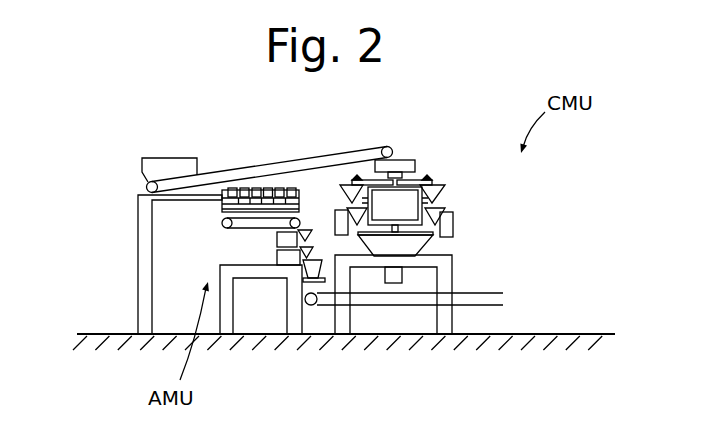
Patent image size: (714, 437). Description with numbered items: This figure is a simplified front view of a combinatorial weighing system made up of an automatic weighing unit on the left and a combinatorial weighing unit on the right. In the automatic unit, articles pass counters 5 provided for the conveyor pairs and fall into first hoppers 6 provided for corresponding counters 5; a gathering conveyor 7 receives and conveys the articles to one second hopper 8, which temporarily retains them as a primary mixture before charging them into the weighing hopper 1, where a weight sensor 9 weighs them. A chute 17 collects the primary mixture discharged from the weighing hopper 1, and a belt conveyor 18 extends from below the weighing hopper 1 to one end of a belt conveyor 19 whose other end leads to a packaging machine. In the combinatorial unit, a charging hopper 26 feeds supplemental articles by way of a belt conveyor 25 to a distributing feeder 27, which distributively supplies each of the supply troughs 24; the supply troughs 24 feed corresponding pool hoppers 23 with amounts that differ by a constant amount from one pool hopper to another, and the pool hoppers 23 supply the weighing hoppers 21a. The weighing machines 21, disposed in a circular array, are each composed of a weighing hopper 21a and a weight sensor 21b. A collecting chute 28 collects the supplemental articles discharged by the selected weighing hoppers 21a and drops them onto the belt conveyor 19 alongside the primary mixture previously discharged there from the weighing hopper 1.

The weighing hopper 1 is at (307, 248).
The counters 5 is at (303, 192).
The first hoppers 6 is at (222, 212).
The gathering conveyor 7 is at (238, 232).
The second hopper 8 is at (300, 232).
The weight sensor 9 is at (261, 299).
The chute 17 is at (288, 258).
The belt conveyor 18 is at (307, 282).
The belt conveyor 19 is at (366, 298).
The weighing machines 21 is at (338, 208).
The weighing hopper 21a is at (442, 210).
The weight sensor 21b is at (452, 226).
The pool hoppers 23 is at (352, 183).
The supply troughs 24 is at (357, 178).
The belt conveyor 25 is at (300, 157).
The charging hopper 26 is at (168, 158).
The distributing feeder 27 is at (410, 160).
The collecting chute 28 is at (428, 240).